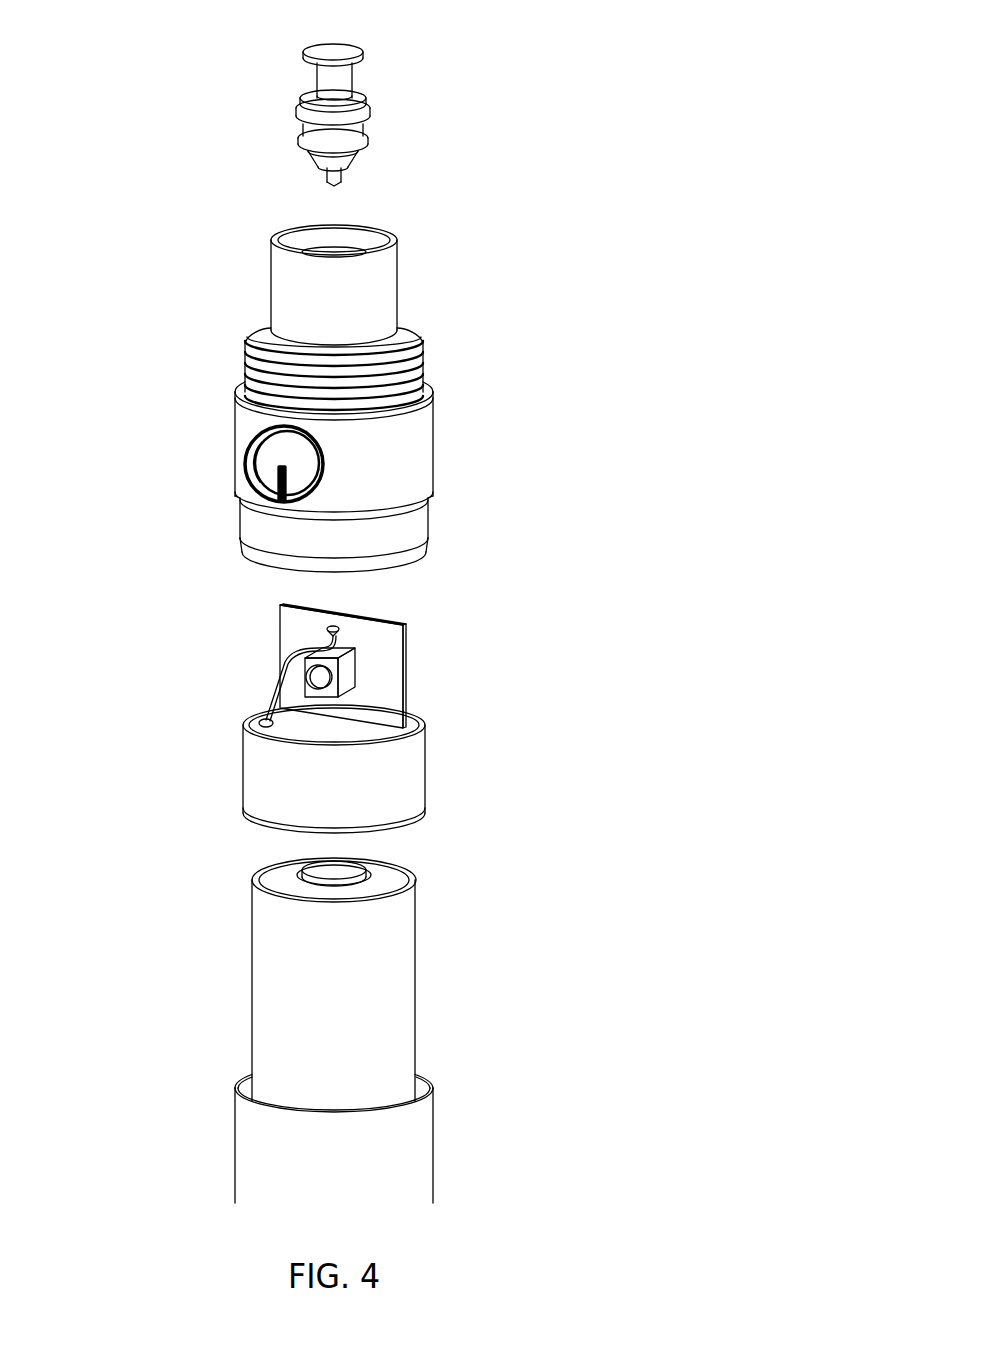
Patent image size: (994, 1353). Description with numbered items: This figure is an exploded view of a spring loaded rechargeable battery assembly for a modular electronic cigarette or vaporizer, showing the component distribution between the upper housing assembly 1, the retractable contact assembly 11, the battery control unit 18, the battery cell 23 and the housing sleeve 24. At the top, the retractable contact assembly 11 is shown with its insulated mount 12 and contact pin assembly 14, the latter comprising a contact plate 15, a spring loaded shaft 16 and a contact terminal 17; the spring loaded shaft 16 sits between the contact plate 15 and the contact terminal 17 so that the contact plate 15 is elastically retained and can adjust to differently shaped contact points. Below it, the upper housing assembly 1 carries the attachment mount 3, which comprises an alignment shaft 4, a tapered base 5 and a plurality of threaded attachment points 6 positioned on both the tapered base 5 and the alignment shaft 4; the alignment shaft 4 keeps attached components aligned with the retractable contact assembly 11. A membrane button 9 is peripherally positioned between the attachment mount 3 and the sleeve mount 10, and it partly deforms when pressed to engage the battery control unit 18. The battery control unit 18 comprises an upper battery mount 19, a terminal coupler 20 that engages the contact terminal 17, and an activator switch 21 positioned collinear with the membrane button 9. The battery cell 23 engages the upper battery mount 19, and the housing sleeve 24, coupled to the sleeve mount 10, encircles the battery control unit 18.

The upper housing assembly 1 is at (505, 428).
The attachment mount 3 is at (222, 303).
The alignment shaft 4 is at (397, 276).
The tapered base 5 is at (412, 340).
The plurality of threaded attachment points 6 is at (323, 248).
The membrane button 9 is at (248, 463).
The sleeve mount 10 is at (238, 548).
The retractable contact assembly 11 is at (398, 129).
The insulated mount 12 is at (305, 128).
The contact pin assembly 14 is at (363, 90).
The contact plate 15 is at (363, 55).
The spring loaded shaft 16 is at (317, 80).
The contact terminal 17 is at (336, 183).
The battery control unit 18 is at (453, 785).
The upper battery mount 19 is at (338, 801).
The terminal coupler 20 is at (272, 676).
The activator switch 21 is at (340, 667).
The battery cell 23 is at (425, 1002).
The housing sleeve 24 is at (222, 1157).